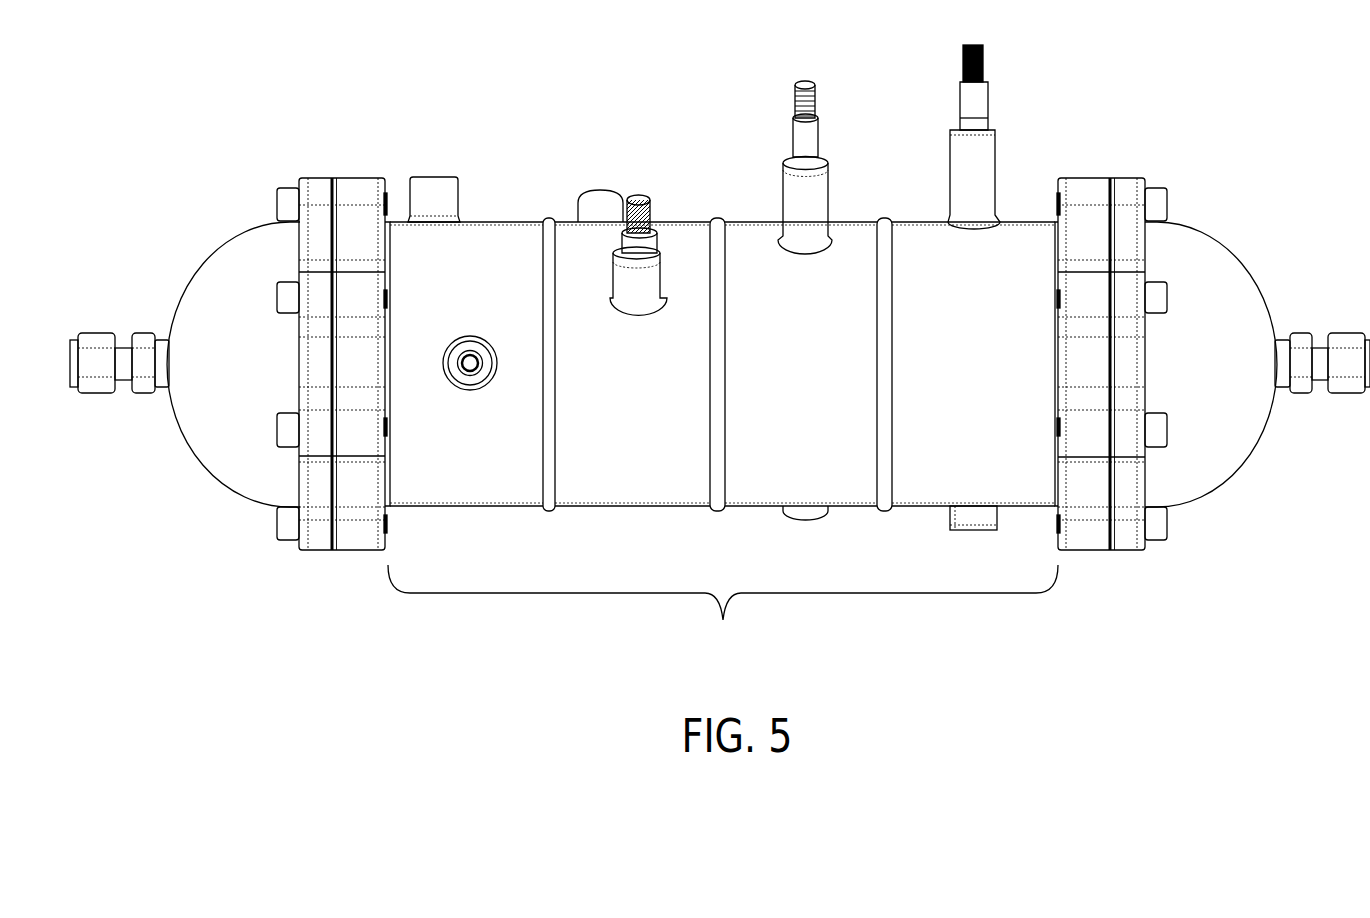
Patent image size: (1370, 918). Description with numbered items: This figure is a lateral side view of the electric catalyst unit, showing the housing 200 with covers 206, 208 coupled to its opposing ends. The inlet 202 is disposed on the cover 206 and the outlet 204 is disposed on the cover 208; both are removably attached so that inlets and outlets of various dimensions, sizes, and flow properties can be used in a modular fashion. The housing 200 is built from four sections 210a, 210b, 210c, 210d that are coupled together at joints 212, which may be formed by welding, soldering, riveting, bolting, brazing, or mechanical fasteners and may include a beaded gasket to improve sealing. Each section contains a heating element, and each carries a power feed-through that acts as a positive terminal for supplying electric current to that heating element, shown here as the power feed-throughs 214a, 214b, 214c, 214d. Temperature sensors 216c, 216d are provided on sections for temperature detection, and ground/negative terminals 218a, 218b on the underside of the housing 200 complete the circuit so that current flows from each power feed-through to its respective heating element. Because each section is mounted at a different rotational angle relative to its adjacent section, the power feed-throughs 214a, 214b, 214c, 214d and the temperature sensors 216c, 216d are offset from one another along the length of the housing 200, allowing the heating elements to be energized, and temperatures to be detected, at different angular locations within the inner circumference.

The housing 200 is at (721, 444).
The inlet 202 is at (1340, 342).
The outlet 204 is at (93, 342).
The cover 206 is at (1212, 472).
The cover 208 is at (222, 463).
The section 210a is at (923, 492).
The section 210b is at (760, 492).
The section 210c is at (628, 493).
The section 210d is at (468, 493).
The joint 212 is at (713, 222).
The power feed-through 214a is at (980, 97).
The power feed-through 214b is at (810, 140).
The power feed-through 214c is at (648, 233).
The power feed-through 214d is at (473, 343).
The temperature sensor 216c is at (600, 202).
The temperature sensor 216d is at (437, 187).
The ground/negative terminal 218a is at (980, 522).
The ground/negative terminal 218b is at (807, 512).